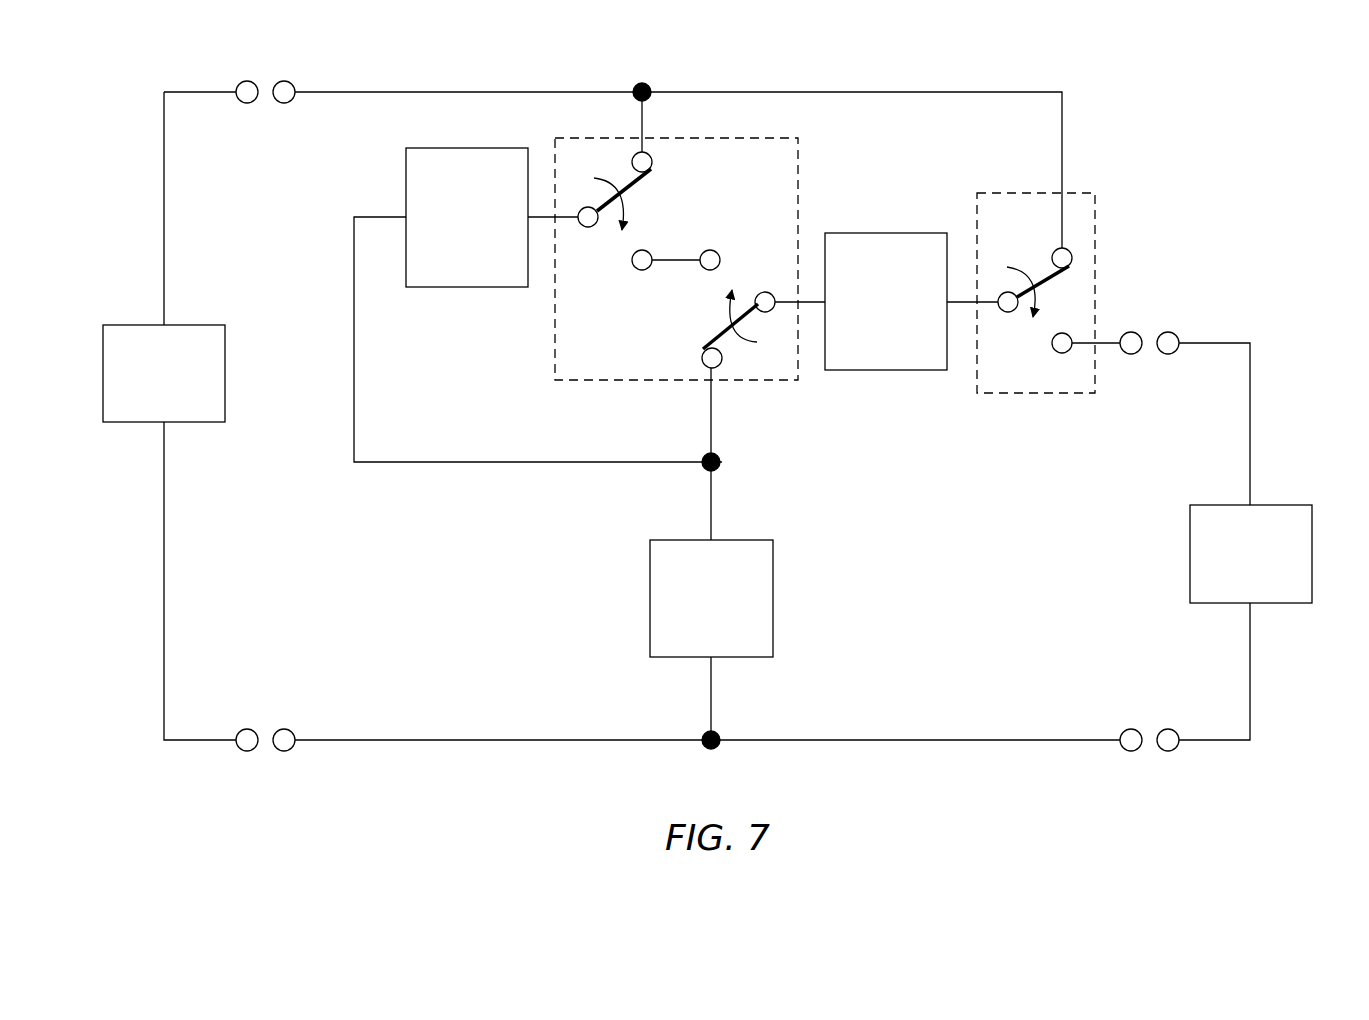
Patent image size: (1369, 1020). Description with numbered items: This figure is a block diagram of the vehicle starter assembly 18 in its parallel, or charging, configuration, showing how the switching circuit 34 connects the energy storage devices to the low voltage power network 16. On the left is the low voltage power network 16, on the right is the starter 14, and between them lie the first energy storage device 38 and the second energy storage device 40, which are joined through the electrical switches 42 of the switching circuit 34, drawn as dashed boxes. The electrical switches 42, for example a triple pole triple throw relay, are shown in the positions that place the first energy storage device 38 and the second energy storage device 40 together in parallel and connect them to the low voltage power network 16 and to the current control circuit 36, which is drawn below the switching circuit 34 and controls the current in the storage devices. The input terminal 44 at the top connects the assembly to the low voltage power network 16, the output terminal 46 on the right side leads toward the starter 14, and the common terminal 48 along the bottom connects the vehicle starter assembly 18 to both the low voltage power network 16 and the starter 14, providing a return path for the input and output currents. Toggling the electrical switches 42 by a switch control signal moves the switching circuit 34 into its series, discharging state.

The starter 14 is at (1288, 505).
The low voltage power network 16 is at (122, 323).
The vehicle starter assembly 18 is at (738, 78).
The switching circuit 34 is at (800, 166).
The current control circuit 36 is at (774, 563).
The first energy storage device 38 is at (406, 170).
The second energy storage device 40 is at (848, 372).
The electrical switches 42 is at (647, 173).
The input terminal 44 is at (283, 80).
The output terminal 46 is at (1131, 331).
The common terminal 48 is at (283, 752).